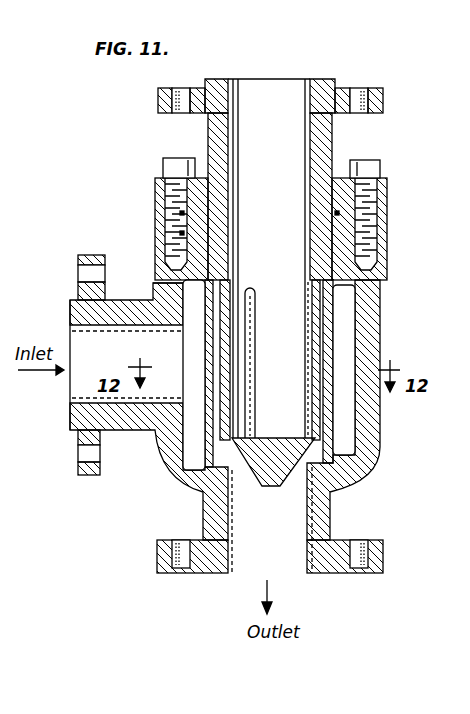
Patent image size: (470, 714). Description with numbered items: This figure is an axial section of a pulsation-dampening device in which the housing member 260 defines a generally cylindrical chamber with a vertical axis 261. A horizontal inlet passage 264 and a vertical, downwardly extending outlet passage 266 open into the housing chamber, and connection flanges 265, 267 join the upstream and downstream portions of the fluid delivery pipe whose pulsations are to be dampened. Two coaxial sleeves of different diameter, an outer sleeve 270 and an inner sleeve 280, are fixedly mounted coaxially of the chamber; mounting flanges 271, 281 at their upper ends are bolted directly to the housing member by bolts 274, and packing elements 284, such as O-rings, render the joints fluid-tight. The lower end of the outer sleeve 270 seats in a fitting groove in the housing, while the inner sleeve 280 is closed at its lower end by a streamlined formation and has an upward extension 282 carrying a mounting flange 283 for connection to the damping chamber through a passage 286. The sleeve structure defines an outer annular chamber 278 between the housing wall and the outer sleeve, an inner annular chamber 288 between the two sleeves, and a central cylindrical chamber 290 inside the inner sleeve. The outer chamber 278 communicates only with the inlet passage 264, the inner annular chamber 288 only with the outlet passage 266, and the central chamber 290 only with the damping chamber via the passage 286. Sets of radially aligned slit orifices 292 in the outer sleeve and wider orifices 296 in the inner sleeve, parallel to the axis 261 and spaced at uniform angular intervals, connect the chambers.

The housing member 260 is at (382, 449).
The vertical axis 261 is at (270, 587).
The horizontal inlet passage 264 is at (75, 400).
The connection flange 265 is at (88, 477).
The vertical outlet passage 266 is at (232, 572).
The connection flange 267 is at (157, 558).
The outer sleeve 270 is at (183, 300).
The mounting flange 271 is at (158, 222).
The bolts 274 is at (163, 165).
The outer annular chamber 278 is at (345, 305).
The inner sleeve 280 is at (223, 328).
The mounting flange 281 is at (158, 192).
The upward extension 282 is at (220, 88).
The mounting flange 283 is at (158, 100).
The packing elements 284 is at (185, 233).
The passage 286 is at (236, 98).
The inner annular chamber 288 is at (320, 338).
The central cylindrical chamber 290 is at (298, 375).
The orifices 292 is at (252, 292).
The orifices 296 is at (312, 412).